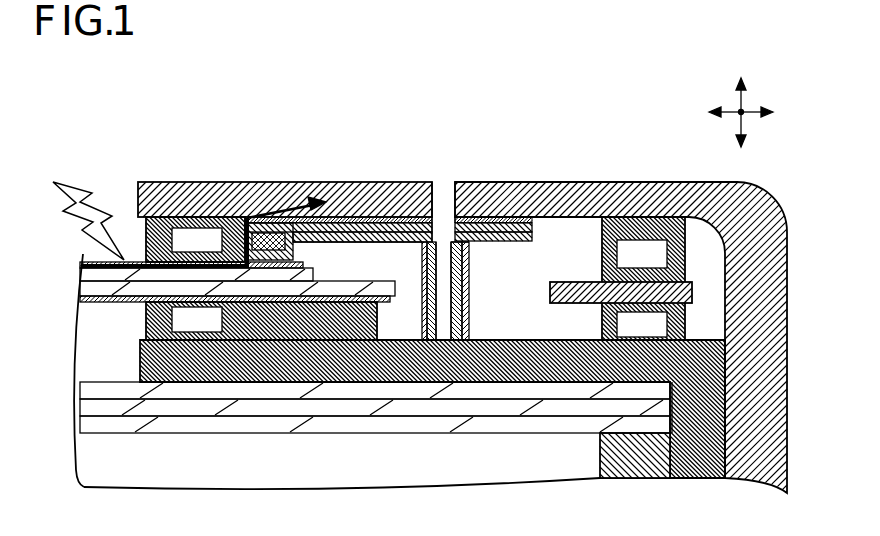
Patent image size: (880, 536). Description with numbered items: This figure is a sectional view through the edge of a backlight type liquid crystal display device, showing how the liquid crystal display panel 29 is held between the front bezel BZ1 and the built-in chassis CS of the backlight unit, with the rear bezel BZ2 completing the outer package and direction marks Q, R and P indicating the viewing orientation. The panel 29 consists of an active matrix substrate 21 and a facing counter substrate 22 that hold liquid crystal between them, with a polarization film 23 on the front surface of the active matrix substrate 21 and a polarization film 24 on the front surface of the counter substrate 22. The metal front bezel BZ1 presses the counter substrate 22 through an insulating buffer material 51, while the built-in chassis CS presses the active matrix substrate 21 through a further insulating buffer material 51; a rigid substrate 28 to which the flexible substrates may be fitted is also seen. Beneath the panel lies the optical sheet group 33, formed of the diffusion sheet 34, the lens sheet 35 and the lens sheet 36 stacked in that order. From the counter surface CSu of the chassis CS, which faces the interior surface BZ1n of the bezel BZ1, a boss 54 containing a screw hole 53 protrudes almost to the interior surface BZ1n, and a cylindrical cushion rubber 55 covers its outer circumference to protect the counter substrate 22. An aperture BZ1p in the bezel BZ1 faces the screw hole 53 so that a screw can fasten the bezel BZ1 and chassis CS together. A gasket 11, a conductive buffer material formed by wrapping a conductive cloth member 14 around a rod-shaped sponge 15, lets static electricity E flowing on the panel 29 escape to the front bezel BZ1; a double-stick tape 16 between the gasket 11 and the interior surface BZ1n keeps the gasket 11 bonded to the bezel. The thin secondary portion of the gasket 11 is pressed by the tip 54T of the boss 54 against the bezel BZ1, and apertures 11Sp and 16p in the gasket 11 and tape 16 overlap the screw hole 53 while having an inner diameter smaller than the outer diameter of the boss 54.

The front bezel BZ1 is at (462, 337).
The aperture BZ1p is at (455, 187).
The interior surface BZ1n is at (583, 218).
The rear bezel BZ2 is at (635, 455).
The built-in chassis CS is at (432, 409).
The counter surface CSu is at (531, 341).
The gasket 11 is at (535, 218).
The aperture 11Sp is at (440, 232).
The double-stick tape 16 is at (481, 218).
The aperture 16p is at (455, 222).
The sponge 15 is at (292, 246).
The cloth member 14 is at (412, 246).
The insulating buffer material 51 is at (415, 278).
The rigid substrate 28 is at (692, 293).
The screw hole 53 is at (443, 268).
The boss 54 is at (463, 297).
The tip 54T is at (471, 245).
The cushion rubber 55 is at (468, 320).
The liquid crystal display panel 29 is at (201, 280).
The polarization film 24 is at (80, 263).
The counter substrate 22 is at (78, 274).
The active matrix substrate 21 is at (78, 287).
The polarization film 23 is at (213, 310).
The optical sheet group 33 is at (340, 407).
The lens sheet 36 is at (80, 391).
The lens sheet 35 is at (80, 408).
The diffusion sheet 34 is at (353, 429).
The static electricity E is at (189, 224).
The Q direction Q is at (741, 113).
The R direction R is at (742, 112).
The P point P is at (749, 124).